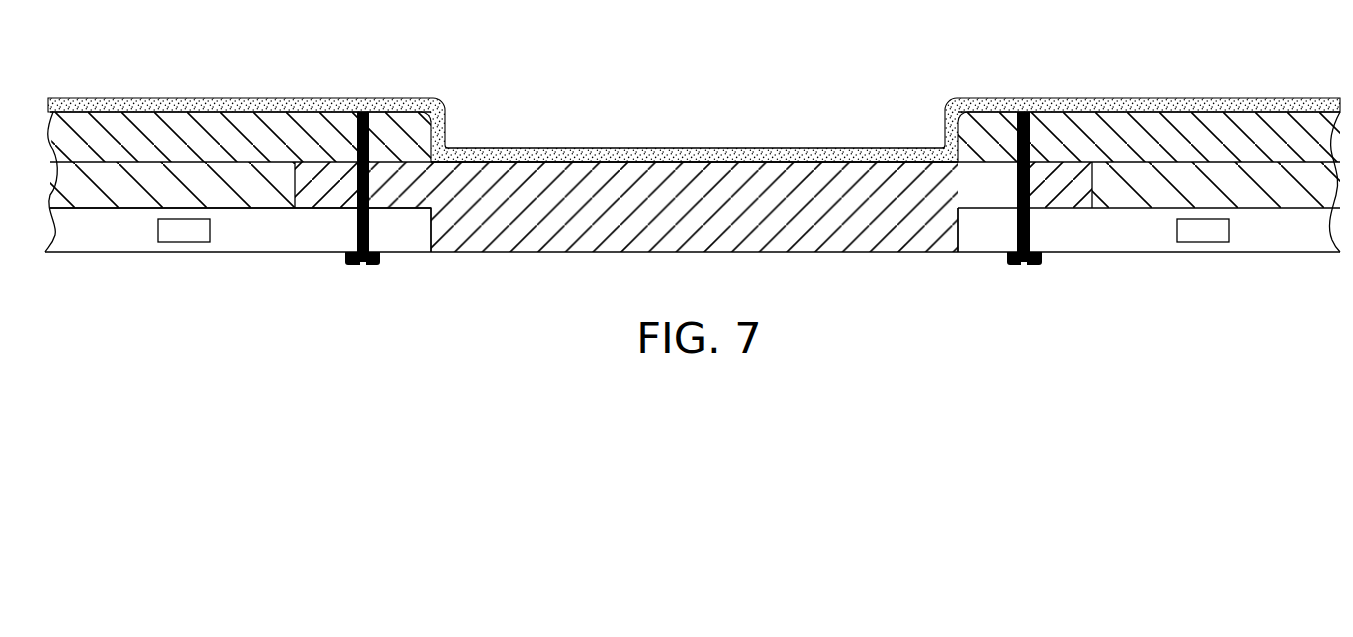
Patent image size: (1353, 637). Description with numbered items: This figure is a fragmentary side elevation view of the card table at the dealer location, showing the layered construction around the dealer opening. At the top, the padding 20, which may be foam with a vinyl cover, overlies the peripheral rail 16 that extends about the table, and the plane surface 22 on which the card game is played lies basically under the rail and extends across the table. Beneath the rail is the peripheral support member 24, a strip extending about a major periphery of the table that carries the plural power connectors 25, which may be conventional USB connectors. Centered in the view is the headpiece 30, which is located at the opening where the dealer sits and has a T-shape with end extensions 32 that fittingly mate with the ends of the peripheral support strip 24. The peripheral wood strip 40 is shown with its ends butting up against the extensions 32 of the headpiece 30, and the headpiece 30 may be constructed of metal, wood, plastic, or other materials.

The peripheral rail 16 is at (178, 138).
The padding 20 is at (1175, 97).
The plane surface 22 is at (778, 155).
The peripheral support member 24 is at (252, 240).
The power connector 25 is at (180, 232).
The headpiece 30 is at (618, 193).
The end extension 32 is at (325, 182).
The peripheral wood strip 40 is at (95, 190).